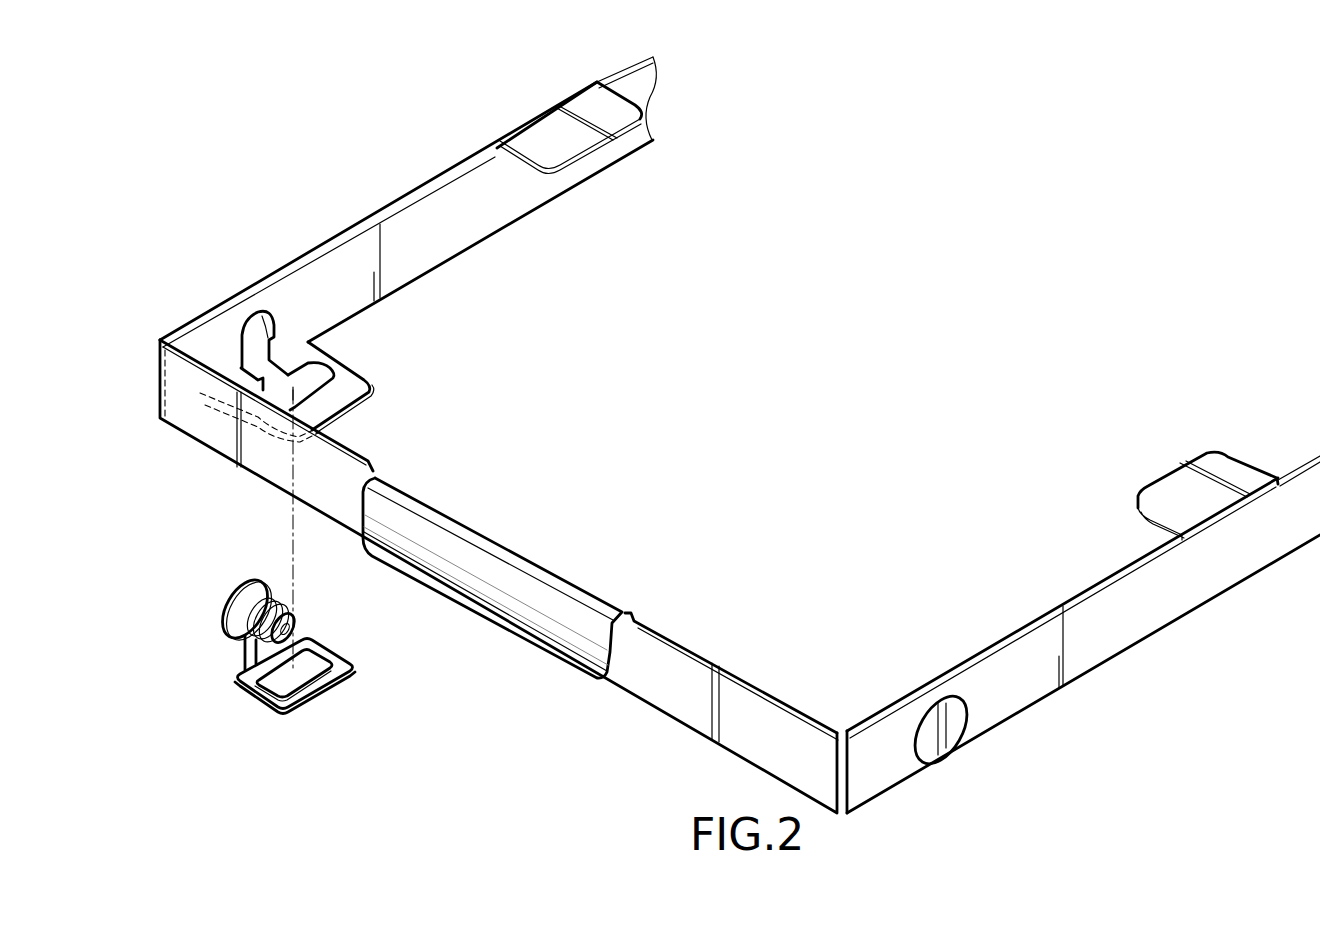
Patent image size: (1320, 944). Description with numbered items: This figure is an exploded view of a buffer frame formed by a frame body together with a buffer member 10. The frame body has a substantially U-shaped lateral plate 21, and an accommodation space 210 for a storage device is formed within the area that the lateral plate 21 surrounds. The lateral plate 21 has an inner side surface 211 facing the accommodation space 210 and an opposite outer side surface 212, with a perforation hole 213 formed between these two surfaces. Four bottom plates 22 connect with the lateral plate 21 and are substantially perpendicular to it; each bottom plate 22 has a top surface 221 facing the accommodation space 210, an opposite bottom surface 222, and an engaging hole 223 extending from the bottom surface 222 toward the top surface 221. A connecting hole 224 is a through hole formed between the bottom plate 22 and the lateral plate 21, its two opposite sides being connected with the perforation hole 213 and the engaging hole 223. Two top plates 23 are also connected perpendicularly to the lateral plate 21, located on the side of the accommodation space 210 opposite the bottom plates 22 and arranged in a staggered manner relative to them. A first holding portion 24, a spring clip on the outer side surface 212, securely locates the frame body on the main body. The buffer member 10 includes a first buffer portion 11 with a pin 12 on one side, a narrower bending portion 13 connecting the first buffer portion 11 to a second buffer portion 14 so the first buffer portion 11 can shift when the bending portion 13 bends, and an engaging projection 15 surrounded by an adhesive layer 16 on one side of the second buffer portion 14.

The buffer member 10 is at (246, 640).
The first buffer portion 11 is at (243, 580).
The pin 12 is at (257, 593).
The bending portion 13 is at (242, 663).
The second buffer portion 14 is at (279, 701).
The engaging projection 15 is at (310, 667).
The adhesive layer 16 is at (260, 693).
The lateral plate 21 is at (740, 435).
The accommodation space 210 is at (1020, 586).
The inner side surface 211 is at (352, 256).
The outer side surface 212 is at (338, 500).
The perforation hole 213 is at (268, 318).
The bottom plate 22 is at (328, 391).
The top surface 221 is at (352, 380).
The bottom surface 222 is at (328, 410).
The engaging hole 223 is at (307, 390).
The connecting hole 224 is at (270, 372).
The top plate 23 is at (547, 128).
The first holding portion 24 is at (532, 632).